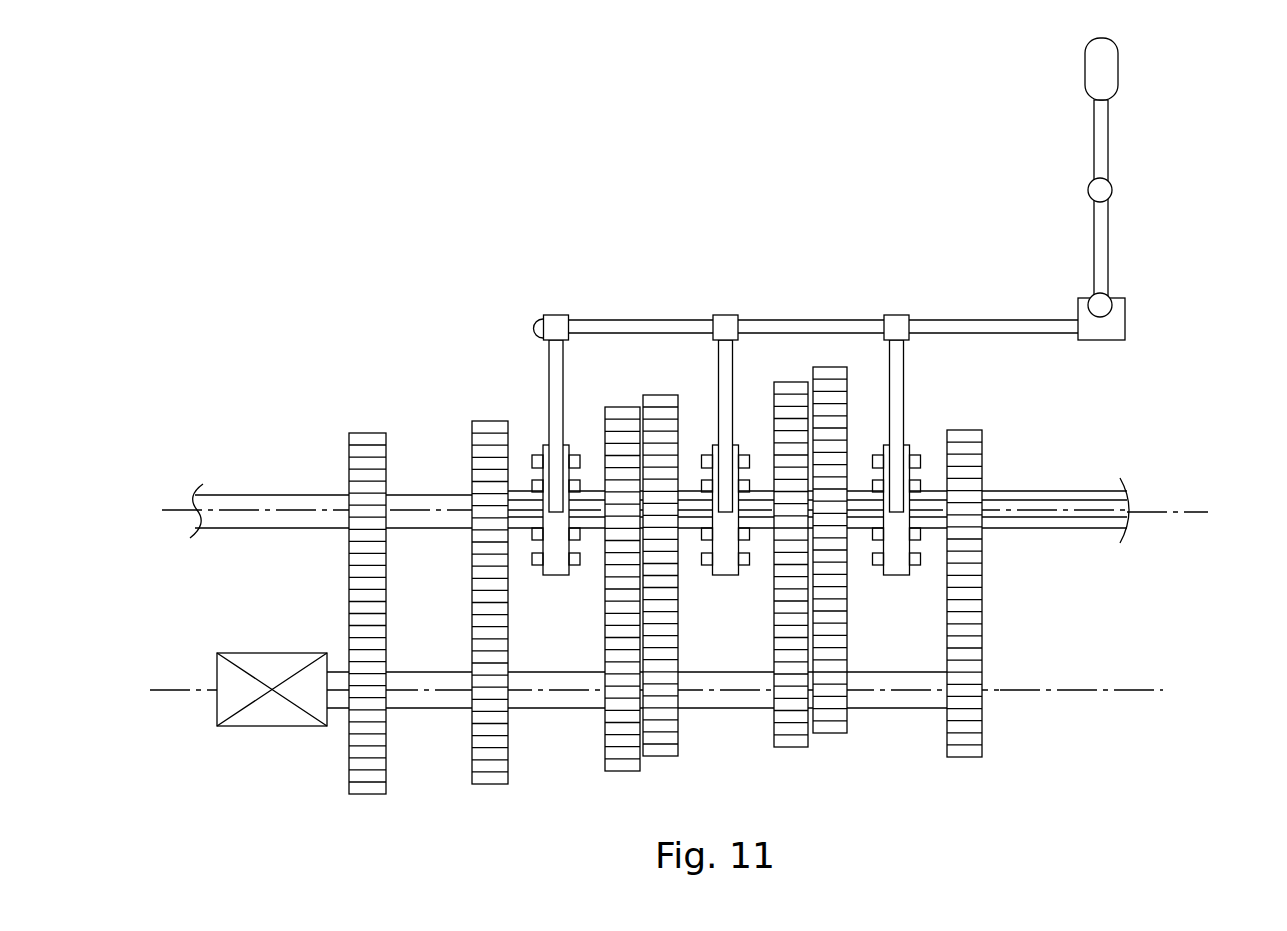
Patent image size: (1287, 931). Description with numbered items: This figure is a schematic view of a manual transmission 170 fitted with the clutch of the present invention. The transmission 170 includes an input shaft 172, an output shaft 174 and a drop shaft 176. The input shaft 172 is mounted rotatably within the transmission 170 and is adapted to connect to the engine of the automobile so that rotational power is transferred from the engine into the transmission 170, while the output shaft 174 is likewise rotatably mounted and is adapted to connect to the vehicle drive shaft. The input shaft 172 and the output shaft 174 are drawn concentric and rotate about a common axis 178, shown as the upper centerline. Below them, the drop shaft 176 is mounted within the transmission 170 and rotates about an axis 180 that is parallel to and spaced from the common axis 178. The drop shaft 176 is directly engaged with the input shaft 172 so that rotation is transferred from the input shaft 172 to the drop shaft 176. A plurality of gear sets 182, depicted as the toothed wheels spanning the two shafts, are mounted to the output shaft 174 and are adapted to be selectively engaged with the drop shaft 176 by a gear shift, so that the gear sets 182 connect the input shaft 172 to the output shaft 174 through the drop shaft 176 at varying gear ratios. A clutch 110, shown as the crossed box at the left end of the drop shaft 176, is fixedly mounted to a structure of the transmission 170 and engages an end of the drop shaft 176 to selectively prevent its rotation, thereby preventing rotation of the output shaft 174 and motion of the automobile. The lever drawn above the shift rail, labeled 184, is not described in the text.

The clutch 110 is at (272, 730).
The transmission 170 is at (696, 457).
The input shaft 172 is at (233, 494).
The output shaft 174 is at (1053, 491).
The drop shaft 176 is at (540, 708).
The common axis 178 is at (1158, 512).
The axis 180 is at (1110, 690).
The gear sets 182 is at (375, 795).
The shift lever 184 is at (1118, 70).